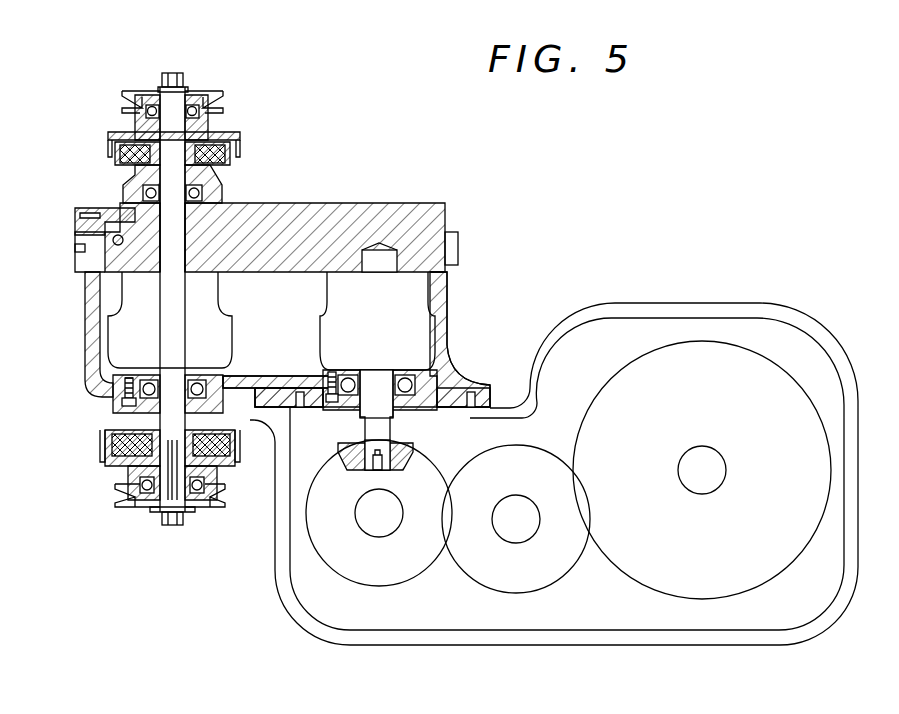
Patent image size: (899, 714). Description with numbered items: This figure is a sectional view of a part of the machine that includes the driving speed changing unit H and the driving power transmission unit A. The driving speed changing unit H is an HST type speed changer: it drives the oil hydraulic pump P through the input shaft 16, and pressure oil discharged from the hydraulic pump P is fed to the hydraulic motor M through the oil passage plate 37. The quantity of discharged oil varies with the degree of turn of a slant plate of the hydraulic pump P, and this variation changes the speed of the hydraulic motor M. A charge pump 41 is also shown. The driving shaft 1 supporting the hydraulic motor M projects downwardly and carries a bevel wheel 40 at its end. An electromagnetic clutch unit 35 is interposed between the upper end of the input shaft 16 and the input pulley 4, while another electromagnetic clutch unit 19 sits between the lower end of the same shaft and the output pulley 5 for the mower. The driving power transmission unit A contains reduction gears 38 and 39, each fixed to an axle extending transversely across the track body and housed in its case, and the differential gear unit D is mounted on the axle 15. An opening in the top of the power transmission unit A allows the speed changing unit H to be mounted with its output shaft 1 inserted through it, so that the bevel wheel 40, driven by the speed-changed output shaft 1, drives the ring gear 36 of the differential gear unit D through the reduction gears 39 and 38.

The driving shaft 1 is at (356, 416).
The input pulley 4 is at (224, 95).
The output pulley 5 is at (119, 497).
The axle 15 is at (701, 495).
The input shaft 16 is at (167, 128).
The electromagnetic clutch unit 19 is at (228, 437).
The electromagnetic clutch unit 35 is at (233, 165).
The ring gear 36 is at (616, 570).
The oil passage plate 37 is at (403, 203).
The reduction gear 38 is at (473, 583).
The reduction gear 39 is at (348, 576).
The bevel wheel 40 is at (400, 445).
The charge pump 41 is at (125, 188).
The driving power transmission unit A is at (655, 303).
The differential gear unit D is at (600, 380).
The driving speed changing unit H is at (348, 193).
The hydraulic pump P is at (172, 334).
The hydraulic motor M is at (380, 334).